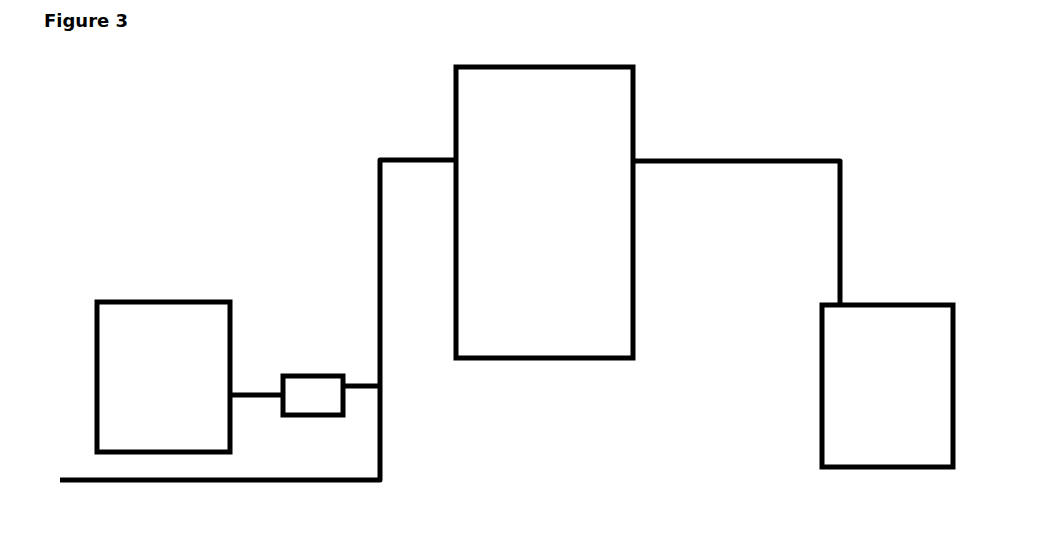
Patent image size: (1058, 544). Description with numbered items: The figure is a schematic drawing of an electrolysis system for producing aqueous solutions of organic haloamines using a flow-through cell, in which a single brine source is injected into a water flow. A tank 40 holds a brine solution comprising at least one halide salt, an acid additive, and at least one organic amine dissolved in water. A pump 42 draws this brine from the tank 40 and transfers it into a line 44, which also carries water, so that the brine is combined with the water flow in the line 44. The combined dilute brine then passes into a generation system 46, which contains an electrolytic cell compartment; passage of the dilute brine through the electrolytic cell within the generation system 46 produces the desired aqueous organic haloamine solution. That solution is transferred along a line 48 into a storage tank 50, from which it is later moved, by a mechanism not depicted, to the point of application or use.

The tank 40 is at (98, 303).
The pump 42 is at (305, 368).
The line 44 is at (222, 488).
The generation system 46 is at (472, 123).
The line 48 is at (727, 155).
The storage tank 50 is at (888, 295).